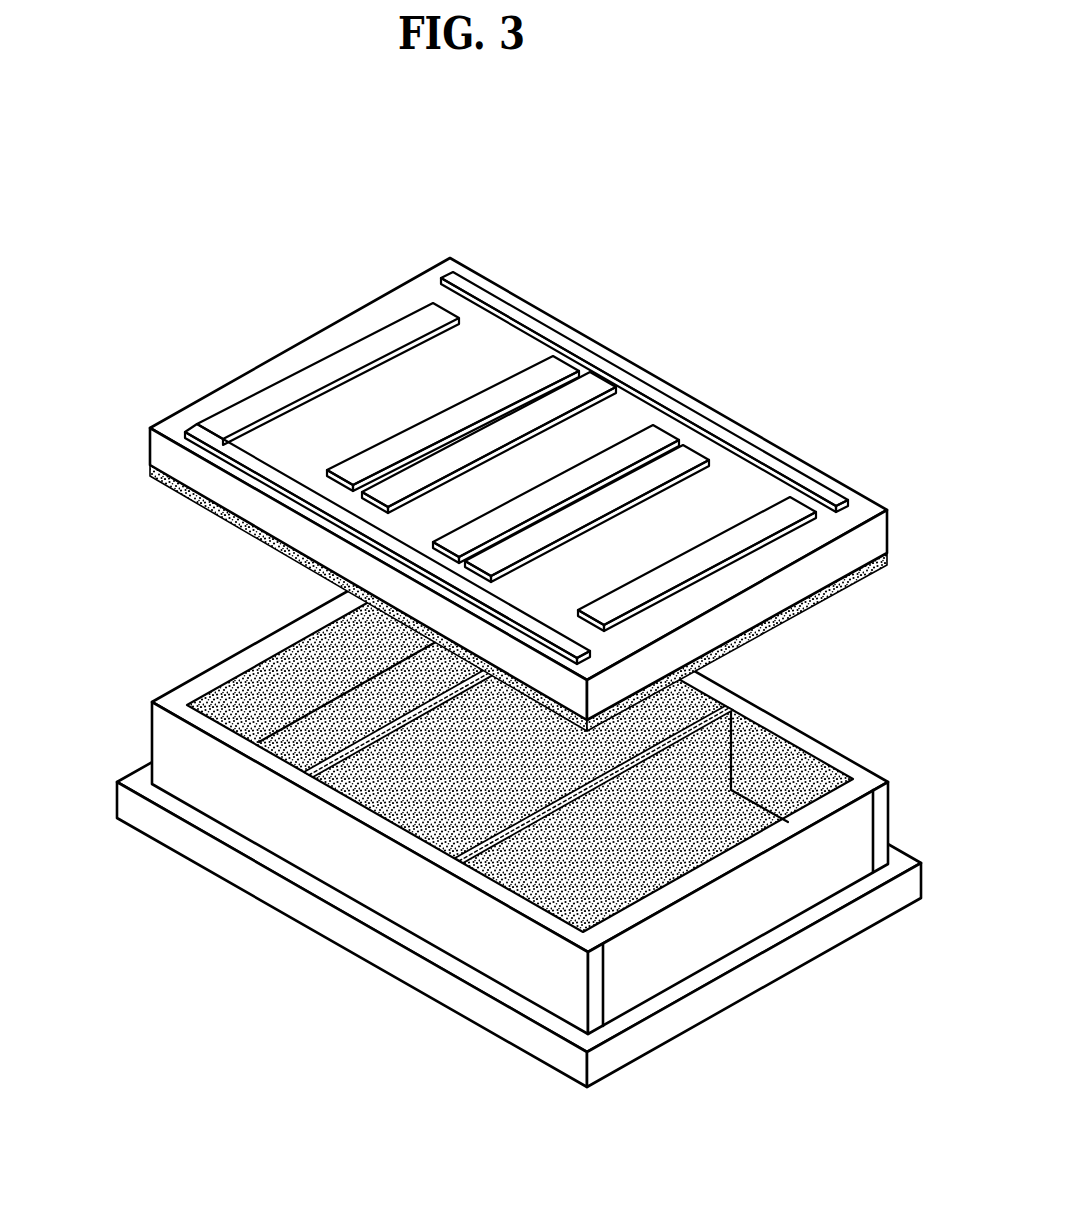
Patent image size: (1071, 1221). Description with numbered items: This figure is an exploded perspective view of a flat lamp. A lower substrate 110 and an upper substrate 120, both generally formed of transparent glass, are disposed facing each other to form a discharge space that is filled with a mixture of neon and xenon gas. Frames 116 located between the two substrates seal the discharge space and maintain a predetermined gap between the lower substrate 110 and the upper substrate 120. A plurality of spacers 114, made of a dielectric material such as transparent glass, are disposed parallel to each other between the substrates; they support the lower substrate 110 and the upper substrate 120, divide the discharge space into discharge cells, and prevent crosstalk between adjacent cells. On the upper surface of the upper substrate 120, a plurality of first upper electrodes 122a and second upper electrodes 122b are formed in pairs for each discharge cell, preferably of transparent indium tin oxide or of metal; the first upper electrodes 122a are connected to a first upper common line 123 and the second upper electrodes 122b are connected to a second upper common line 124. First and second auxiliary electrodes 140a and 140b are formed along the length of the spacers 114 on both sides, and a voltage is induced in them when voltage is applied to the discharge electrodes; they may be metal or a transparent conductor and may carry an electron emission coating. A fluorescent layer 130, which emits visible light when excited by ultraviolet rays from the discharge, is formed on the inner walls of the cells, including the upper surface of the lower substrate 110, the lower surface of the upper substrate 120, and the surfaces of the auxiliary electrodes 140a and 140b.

The lower substrate 110 is at (125, 805).
The spacers 114 is at (717, 707).
The frames 116 is at (160, 740).
The upper substrate 120 is at (150, 434).
The first upper electrodes 122a is at (587, 372).
The second upper electrodes 122b is at (443, 298).
The first upper common line 123 is at (490, 298).
The second upper common line 124 is at (203, 427).
The fluorescent layer 130 is at (150, 468).
The first auxiliary electrode 140a is at (323, 782).
The second auxiliary electrode 140b is at (455, 856).